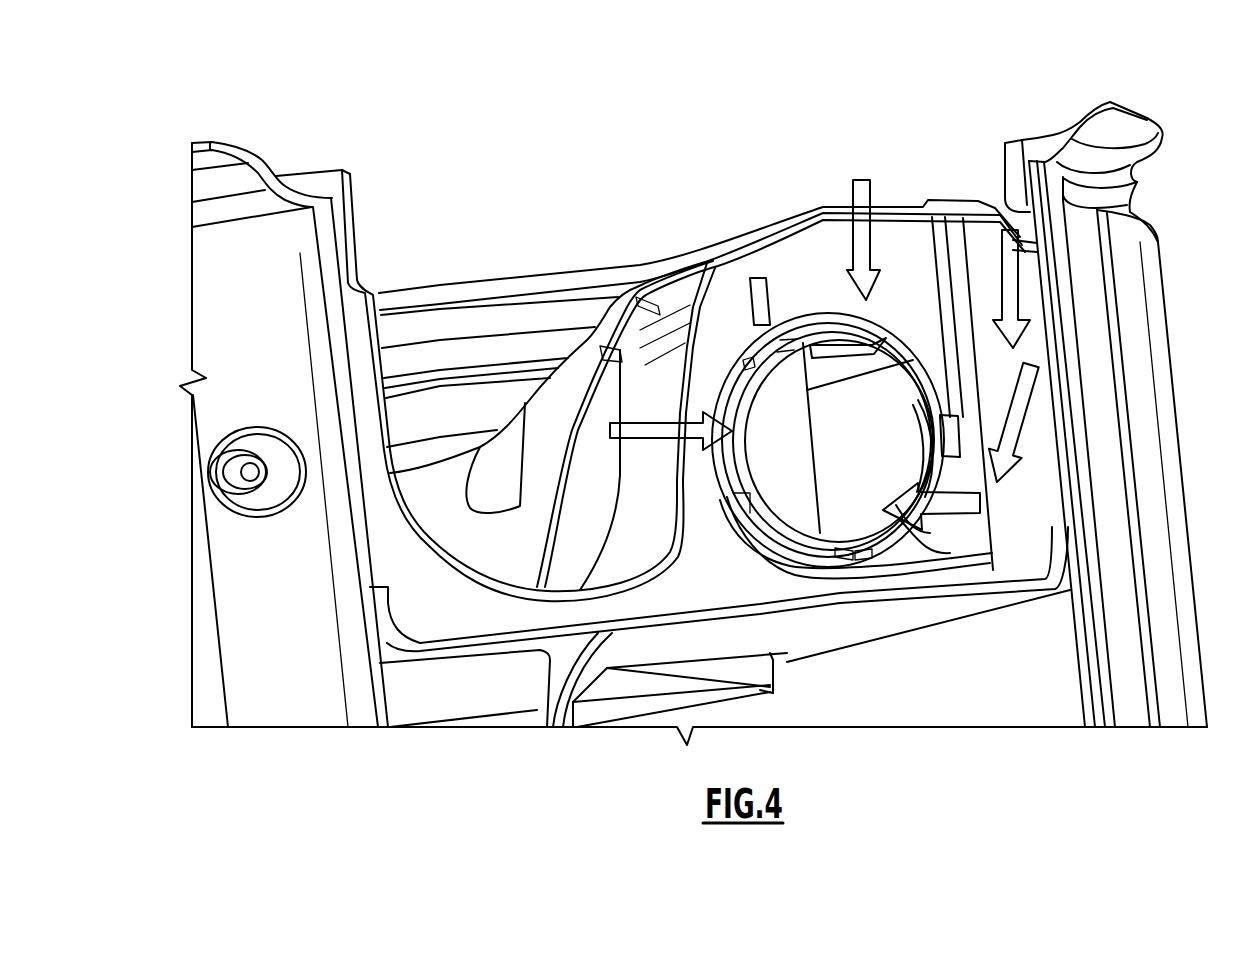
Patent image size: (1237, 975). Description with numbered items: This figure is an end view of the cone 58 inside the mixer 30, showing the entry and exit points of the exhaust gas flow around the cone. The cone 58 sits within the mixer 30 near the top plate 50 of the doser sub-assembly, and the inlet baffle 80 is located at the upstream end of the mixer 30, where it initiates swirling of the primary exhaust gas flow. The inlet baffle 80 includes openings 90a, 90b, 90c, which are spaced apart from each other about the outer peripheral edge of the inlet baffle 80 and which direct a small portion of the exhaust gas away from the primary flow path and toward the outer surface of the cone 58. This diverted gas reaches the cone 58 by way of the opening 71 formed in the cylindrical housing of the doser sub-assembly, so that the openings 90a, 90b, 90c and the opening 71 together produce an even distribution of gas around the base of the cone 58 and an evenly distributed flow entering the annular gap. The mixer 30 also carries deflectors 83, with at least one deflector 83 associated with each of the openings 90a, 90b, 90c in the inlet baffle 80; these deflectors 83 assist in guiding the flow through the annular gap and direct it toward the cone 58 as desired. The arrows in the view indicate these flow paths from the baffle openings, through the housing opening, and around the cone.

The mixer 30 is at (603, 57).
The top plate 50 is at (1140, 394).
The cone 58 is at (745, 475).
The opening 71 is at (913, 518).
The inlet baffle 80 is at (737, 256).
The deflector 83 is at (768, 303).
The opening 90a is at (665, 553).
The opening 90b is at (895, 203).
The opening 90c is at (990, 203).